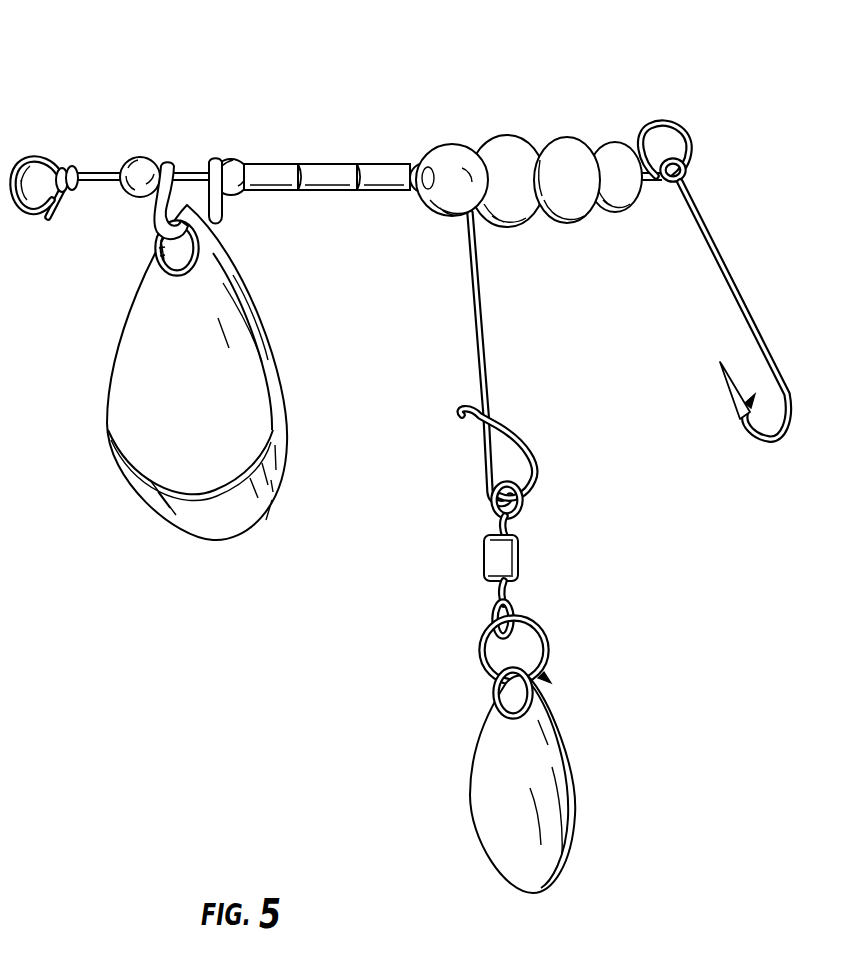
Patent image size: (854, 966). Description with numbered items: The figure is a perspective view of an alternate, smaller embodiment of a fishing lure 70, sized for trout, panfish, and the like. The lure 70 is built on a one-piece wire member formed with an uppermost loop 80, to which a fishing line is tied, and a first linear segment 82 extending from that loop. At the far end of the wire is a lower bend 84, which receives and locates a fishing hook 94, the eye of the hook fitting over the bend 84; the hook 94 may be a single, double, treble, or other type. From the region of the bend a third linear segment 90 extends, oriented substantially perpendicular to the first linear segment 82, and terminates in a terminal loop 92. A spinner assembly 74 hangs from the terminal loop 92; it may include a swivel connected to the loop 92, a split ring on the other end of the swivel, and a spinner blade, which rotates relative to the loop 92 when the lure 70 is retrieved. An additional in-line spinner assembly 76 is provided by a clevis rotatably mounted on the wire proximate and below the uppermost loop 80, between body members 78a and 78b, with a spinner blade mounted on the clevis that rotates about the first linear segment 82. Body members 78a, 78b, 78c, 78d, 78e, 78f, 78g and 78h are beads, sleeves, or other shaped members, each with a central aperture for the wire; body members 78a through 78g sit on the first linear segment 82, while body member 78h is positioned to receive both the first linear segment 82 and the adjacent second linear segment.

The lure 70 is at (65, 75).
The spinner assembly 74 is at (569, 655).
The spinner assembly 76 is at (294, 357).
The body member 78a is at (132, 163).
The body member 78b is at (222, 162).
The body member 78c is at (265, 168).
The body member 78d is at (332, 163).
The body member 78e is at (379, 166).
The body member 78f is at (417, 166).
The body member 78g is at (442, 162).
The body member 78h is at (575, 167).
The uppermost loop 80 is at (31, 212).
The first linear segment 82 is at (183, 172).
The lower bend 84 is at (678, 125).
The third linear segment 90 is at (484, 324).
The terminal loop 92 is at (533, 458).
The fishing hook 94 is at (727, 262).